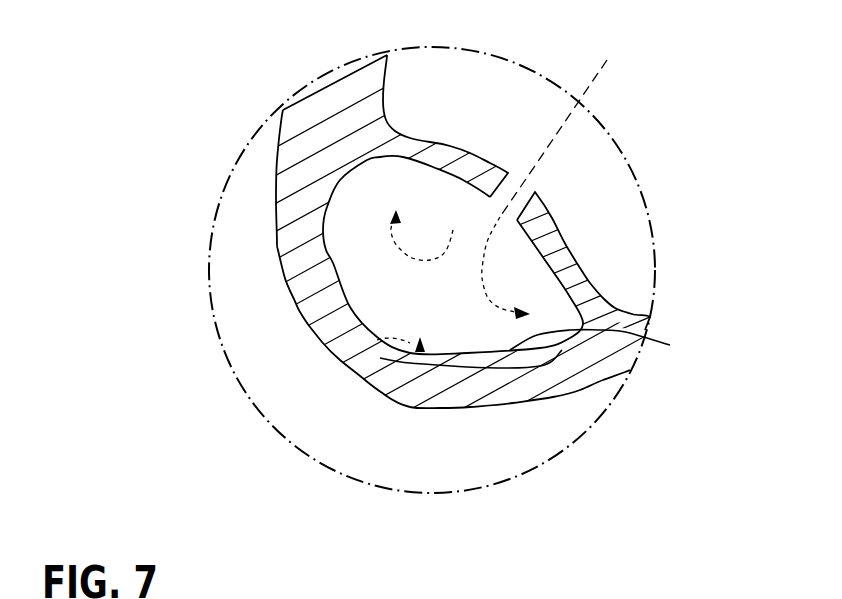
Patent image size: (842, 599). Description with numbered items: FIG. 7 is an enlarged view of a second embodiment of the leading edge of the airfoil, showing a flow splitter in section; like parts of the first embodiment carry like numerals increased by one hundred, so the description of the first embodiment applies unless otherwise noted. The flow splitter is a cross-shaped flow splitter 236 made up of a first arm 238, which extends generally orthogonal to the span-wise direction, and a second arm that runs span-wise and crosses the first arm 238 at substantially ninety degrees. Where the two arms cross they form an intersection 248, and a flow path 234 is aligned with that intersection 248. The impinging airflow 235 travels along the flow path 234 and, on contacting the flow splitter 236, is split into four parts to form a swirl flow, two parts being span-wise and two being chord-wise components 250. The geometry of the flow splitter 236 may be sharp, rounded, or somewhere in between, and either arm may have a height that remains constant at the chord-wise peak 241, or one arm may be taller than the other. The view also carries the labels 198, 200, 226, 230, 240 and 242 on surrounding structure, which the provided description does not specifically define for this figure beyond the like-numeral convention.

The duct 198 is at (555, 397).
The heat exchanger body 200 is at (278, 243).
The flow path 226 is at (391, 197).
The wall portion 230 is at (573, 243).
The flow path 234 is at (582, 95).
The impinging airflow 235 is at (485, 234).
The cross-shaped flow splitter 236 is at (418, 347).
The first arm 238 is at (352, 302).
The lip 240 is at (670, 345).
The chord-wise peak 241 is at (420, 292).
The element 242 is at (369, 592).
The intersection 248 is at (420, 292).
The chord-wise components 250 is at (466, 270).